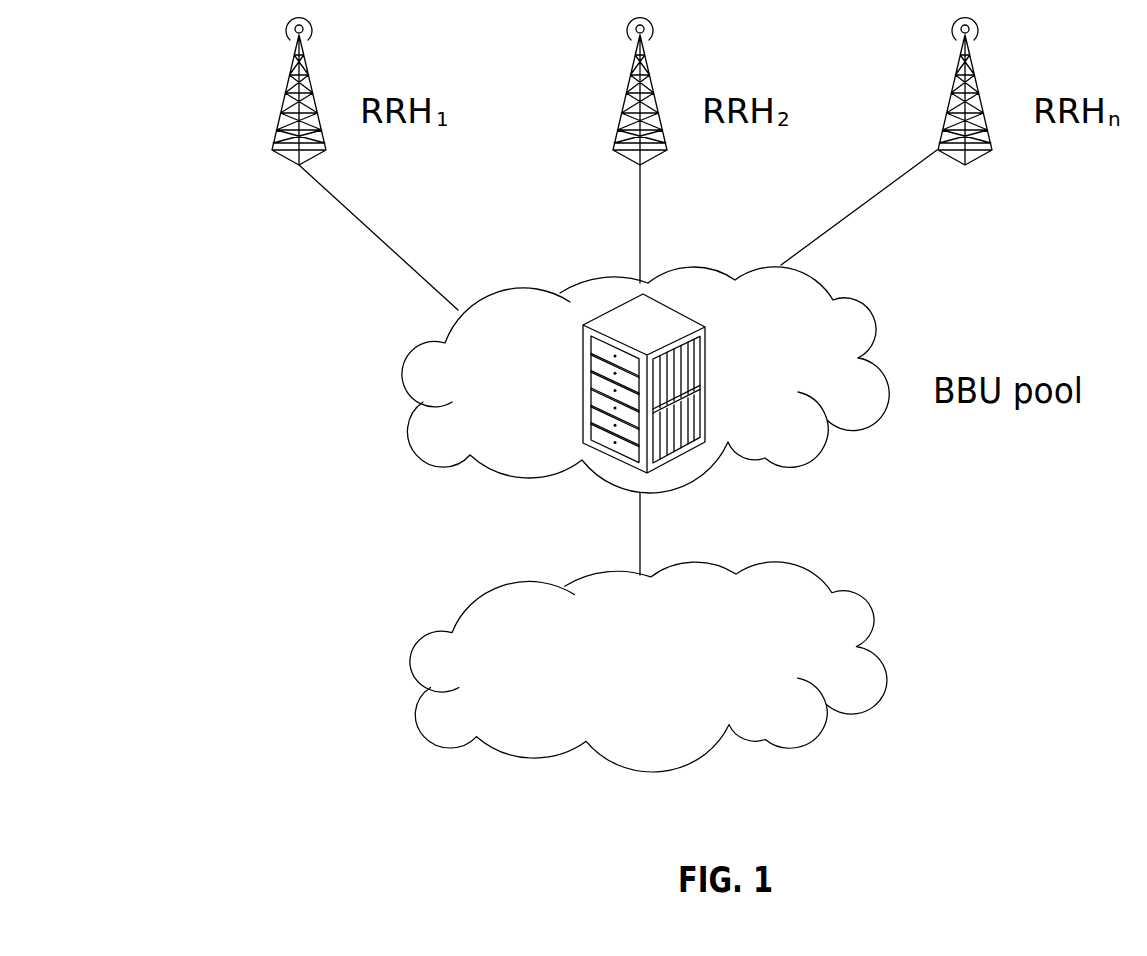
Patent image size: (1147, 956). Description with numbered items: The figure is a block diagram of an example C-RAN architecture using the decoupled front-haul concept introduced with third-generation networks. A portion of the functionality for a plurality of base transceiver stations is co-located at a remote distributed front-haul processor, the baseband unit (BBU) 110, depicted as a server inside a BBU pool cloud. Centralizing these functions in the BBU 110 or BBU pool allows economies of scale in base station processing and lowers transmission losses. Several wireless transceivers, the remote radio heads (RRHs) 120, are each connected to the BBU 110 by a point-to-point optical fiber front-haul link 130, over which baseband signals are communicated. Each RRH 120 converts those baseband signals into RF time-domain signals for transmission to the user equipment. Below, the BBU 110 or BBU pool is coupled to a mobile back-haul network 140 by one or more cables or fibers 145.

The baseband unit (BBU) 110 is at (708, 366).
The remote radio head (RRH) 120 is at (280, 102).
The point-to-point optical fiber front-haul link 130 is at (377, 237).
The mobile back-haul network 140 is at (453, 613).
The cables or fibers 145 is at (640, 545).